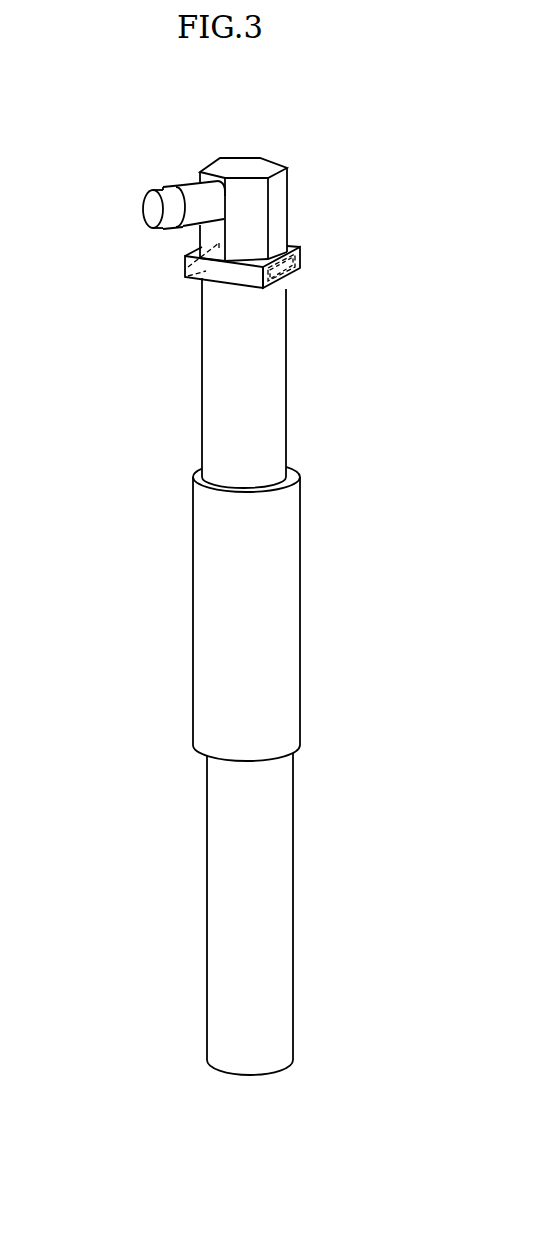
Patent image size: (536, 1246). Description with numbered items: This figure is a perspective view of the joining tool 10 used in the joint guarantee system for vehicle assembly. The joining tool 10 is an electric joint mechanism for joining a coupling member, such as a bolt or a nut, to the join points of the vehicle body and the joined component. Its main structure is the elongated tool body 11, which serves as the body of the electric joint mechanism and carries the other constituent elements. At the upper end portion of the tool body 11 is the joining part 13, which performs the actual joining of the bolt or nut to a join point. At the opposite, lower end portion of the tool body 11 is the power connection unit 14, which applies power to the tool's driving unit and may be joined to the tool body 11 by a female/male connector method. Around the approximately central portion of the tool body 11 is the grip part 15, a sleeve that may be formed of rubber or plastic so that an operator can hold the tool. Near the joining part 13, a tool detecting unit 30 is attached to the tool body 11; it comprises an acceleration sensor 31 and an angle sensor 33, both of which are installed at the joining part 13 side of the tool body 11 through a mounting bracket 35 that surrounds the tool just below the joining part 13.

The joining tool 10 is at (253, 108).
The tool body 11 is at (203, 418).
The joining part 13 is at (145, 209).
The power connection unit 14 is at (207, 912).
The grip part 15 is at (293, 608).
The tool detecting unit 30 is at (97, 278).
The acceleration sensor 31 is at (184, 262).
The angle sensor 33 is at (280, 288).
The mounting bracket 35 is at (300, 248).